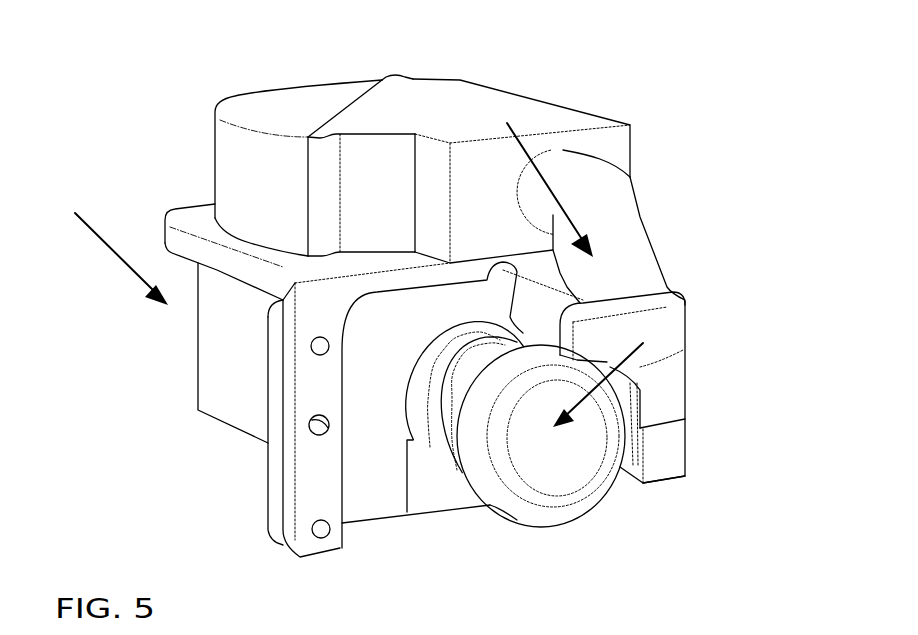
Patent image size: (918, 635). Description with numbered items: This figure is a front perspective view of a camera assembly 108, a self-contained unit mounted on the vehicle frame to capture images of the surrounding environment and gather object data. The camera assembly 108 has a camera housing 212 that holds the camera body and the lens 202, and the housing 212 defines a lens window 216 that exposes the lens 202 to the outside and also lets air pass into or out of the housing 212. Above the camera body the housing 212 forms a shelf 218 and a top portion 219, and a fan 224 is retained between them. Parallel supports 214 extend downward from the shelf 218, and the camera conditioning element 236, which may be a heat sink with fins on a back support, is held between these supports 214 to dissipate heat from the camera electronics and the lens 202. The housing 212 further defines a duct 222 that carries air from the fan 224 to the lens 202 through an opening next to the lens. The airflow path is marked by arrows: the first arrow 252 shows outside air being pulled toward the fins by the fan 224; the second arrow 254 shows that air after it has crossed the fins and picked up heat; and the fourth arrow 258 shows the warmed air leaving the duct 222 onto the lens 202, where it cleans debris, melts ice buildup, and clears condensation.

The camera assembly 108 is at (717, 173).
The lens 202 is at (567, 468).
The camera housing 212 is at (510, 62).
The parallel supports 214 is at (217, 340).
The lens window 216 is at (685, 419).
The shelf 218 is at (192, 225).
The top portion 219 is at (392, 100).
The duct 222 is at (623, 227).
The fan 224 is at (320, 183).
The camera conditioning element 236 is at (266, 419).
The first arrow 252 is at (110, 248).
The second arrow 254 is at (563, 150).
The fourth arrow 258 is at (655, 357).